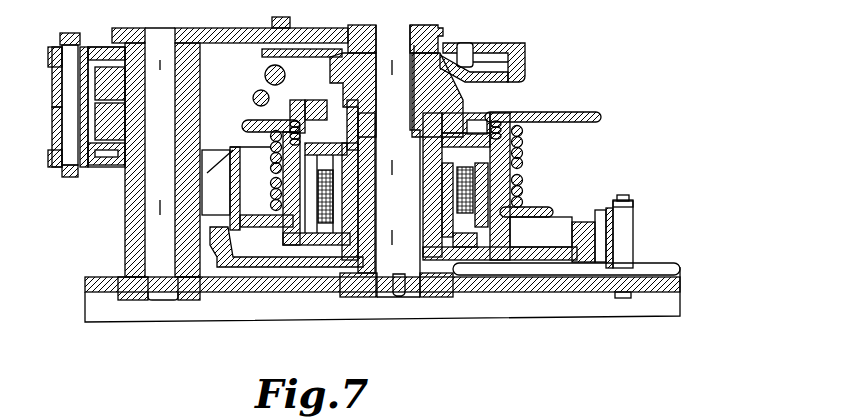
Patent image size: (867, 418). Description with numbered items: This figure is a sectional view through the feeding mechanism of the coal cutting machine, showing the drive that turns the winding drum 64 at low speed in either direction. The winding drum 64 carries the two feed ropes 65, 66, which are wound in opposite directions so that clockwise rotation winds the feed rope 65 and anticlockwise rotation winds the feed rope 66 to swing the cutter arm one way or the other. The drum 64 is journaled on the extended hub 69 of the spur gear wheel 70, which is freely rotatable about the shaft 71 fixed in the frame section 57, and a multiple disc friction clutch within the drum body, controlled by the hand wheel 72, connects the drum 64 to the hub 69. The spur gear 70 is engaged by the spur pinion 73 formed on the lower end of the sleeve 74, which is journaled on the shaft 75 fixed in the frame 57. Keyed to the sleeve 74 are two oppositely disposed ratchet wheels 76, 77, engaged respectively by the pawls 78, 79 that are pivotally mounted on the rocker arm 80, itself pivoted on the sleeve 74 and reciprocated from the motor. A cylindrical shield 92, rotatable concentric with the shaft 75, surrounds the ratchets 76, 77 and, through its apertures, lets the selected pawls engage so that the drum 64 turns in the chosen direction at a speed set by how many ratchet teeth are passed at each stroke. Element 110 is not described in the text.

The frame section 57 is at (107, 297).
The winding drum 64 is at (548, 117).
The feed rope 65 is at (524, 142).
The feed rope 66 is at (524, 183).
The extended hub 69 is at (447, 125).
The spur gear wheel 70 is at (555, 267).
The shaft 71 is at (408, 262).
The hand wheel 72 is at (523, 61).
The spur pinion 73 is at (203, 258).
The sleeve 74 is at (195, 42).
The shaft 75 is at (162, 297).
The ratchet wheel 76 is at (107, 70).
The ratchet wheel 77 is at (110, 153).
The pawl 78 is at (53, 80).
The pawl 79 is at (60, 140).
The rocker arm 80 is at (59, 45).
The cylindrical shield 92 is at (266, 75).
The pin 110 is at (270, 99).